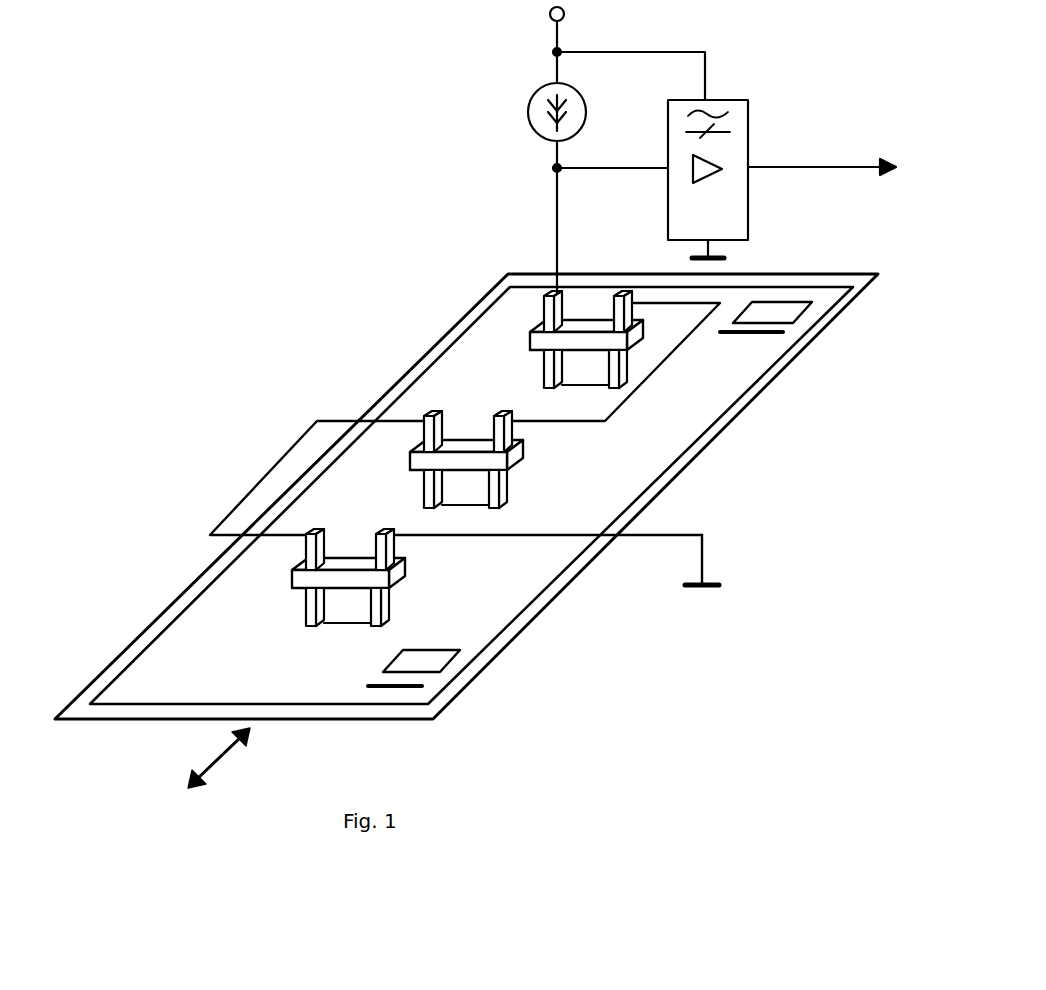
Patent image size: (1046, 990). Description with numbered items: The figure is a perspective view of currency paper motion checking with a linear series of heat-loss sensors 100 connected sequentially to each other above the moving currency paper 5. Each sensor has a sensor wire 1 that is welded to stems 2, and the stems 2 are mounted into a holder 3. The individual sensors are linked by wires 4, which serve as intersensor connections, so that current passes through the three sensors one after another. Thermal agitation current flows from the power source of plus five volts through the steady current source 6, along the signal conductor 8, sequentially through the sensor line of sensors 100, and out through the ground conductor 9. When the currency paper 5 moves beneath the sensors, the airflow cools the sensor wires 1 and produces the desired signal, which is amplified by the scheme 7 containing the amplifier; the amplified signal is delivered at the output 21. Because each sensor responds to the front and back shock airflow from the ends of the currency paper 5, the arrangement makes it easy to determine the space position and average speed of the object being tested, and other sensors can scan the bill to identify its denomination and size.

The sensor wire 1 is at (583, 383).
The stems 2 is at (626, 292).
The holder 3 is at (528, 338).
The wires 4 is at (660, 368).
The currency paper 5 is at (642, 455).
The steady current source 6 is at (581, 92).
The scheme 7 is at (665, 147).
The signal conductor 8 is at (560, 234).
The ground conductor 9 is at (650, 537).
The output signal 21 is at (832, 163).
The heat-loss sensors 100 is at (426, 499).